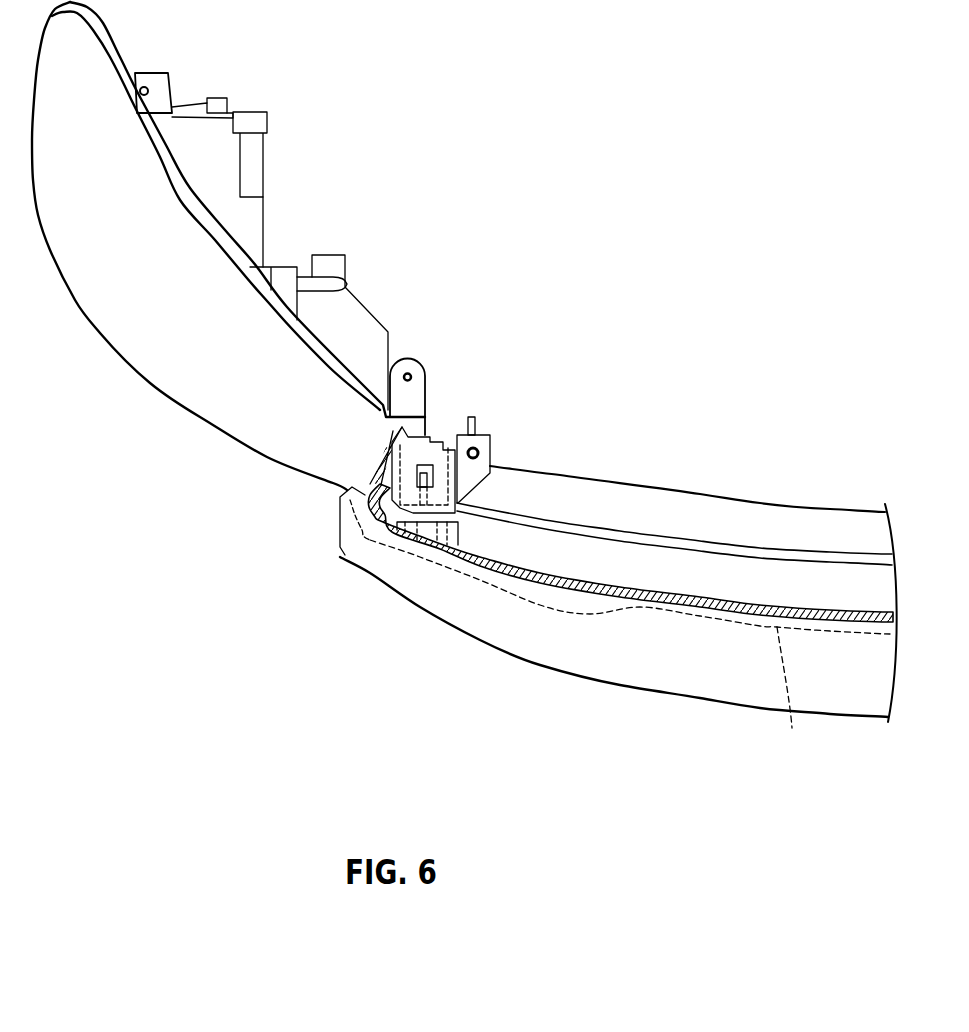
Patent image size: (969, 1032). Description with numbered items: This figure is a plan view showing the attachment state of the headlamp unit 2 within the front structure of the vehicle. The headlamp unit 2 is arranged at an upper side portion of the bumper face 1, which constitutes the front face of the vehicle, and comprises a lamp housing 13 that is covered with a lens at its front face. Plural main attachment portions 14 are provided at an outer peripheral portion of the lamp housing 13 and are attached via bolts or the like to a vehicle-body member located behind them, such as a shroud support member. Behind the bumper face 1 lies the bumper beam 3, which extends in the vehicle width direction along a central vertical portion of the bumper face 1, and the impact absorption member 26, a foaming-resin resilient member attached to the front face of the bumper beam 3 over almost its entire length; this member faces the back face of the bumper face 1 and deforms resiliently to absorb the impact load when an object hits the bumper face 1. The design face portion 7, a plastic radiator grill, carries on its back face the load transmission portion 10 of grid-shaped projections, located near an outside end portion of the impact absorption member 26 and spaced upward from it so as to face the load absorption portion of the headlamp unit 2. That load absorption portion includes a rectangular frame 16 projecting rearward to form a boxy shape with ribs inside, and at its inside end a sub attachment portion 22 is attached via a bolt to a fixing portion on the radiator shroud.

The bumper face 1 is at (594, 689).
The headlamp unit 2 is at (149, 409).
The bumper beam 3 is at (783, 516).
The design face portion 7 is at (423, 547).
The load transmission portion 10 is at (477, 567).
The lamp housing 13 is at (257, 219).
The main attachment portion 14 is at (150, 72).
The rectangular frame 16 is at (372, 538).
The sub attachment portion 22 is at (484, 463).
The impact absorption member 26 is at (790, 696).